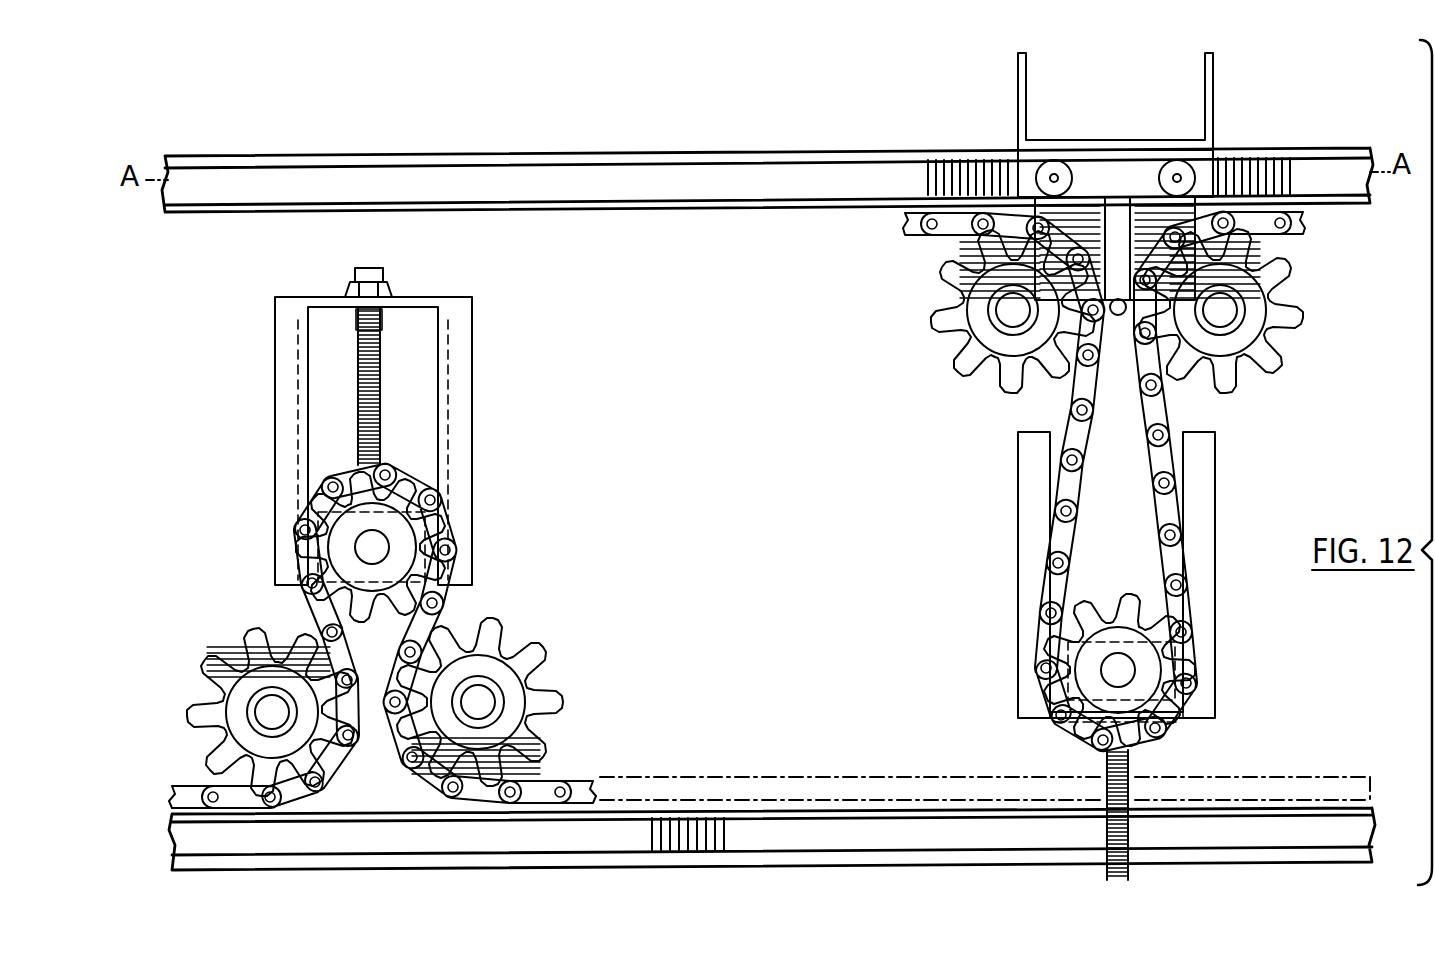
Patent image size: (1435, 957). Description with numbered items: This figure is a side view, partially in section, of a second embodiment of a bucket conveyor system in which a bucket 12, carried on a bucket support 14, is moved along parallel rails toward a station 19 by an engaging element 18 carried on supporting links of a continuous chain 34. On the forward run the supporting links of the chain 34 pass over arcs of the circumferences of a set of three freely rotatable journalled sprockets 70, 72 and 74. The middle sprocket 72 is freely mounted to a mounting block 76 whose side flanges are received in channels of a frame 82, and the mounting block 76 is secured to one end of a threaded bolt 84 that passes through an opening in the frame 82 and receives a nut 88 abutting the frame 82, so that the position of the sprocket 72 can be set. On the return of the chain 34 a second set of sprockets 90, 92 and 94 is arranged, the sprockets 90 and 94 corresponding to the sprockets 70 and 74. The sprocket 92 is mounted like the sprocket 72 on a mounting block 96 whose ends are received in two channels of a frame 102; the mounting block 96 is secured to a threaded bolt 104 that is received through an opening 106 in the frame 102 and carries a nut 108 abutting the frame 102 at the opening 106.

The bucket 12 is at (1213, 99).
The bucket support 14 is at (1326, 147).
The engaging element 18 is at (1118, 318).
The station 19 is at (1108, 72).
The continuous chain 34 is at (921, 238).
The sprocket 70 is at (1287, 316).
The sprocket 72 is at (1138, 612).
The sprocket 74 is at (976, 356).
The mounting block 76 is at (1192, 686).
The frame 82 is at (1018, 606).
The threaded bolt 84 is at (1136, 768).
The nut 88 is at (1062, 735).
The sprocket 90 is at (222, 668).
The sprocket 92 is at (432, 522).
The sprocket 94 is at (536, 682).
The mounting block 96 is at (446, 554).
The frame 102 is at (473, 406).
The threaded bolt 104 is at (356, 340).
The opening 106 is at (381, 312).
The nut 108 is at (391, 284).